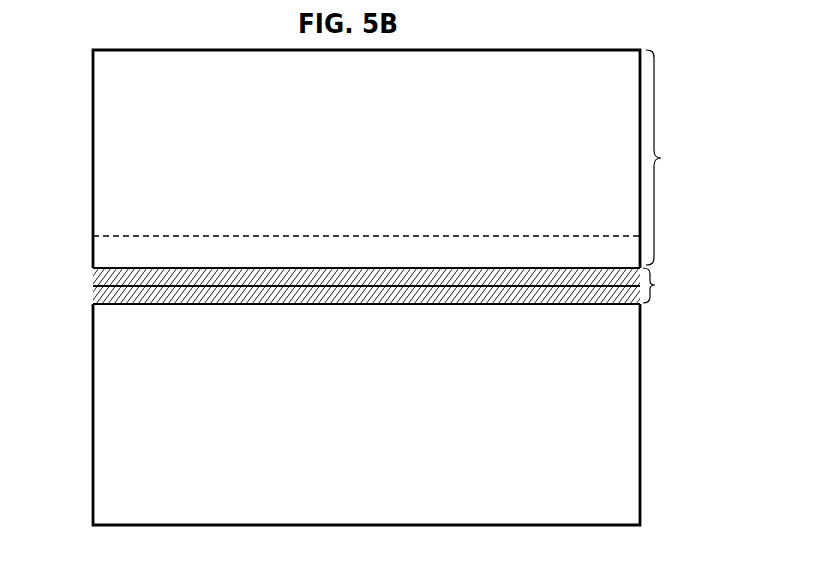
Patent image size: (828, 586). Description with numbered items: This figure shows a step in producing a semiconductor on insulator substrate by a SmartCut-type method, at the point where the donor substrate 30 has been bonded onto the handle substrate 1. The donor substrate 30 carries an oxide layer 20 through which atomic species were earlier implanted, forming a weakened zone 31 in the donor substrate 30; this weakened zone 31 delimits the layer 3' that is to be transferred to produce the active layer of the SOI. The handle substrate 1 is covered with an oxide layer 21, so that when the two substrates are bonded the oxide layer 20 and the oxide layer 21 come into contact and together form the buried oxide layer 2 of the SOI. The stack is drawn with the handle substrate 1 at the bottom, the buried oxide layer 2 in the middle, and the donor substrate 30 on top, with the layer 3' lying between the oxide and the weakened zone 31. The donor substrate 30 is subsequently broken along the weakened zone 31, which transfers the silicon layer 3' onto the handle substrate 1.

The handle substrate 1 is at (105, 414).
The buried oxide layer 2 is at (344, 299).
The oxide layer 20 is at (108, 278).
The oxide layer 21 is at (106, 294).
The layer to be transferred 3' is at (341, 256).
The donor substrate 30 is at (393, 159).
The weakened zone 31 is at (125, 235).